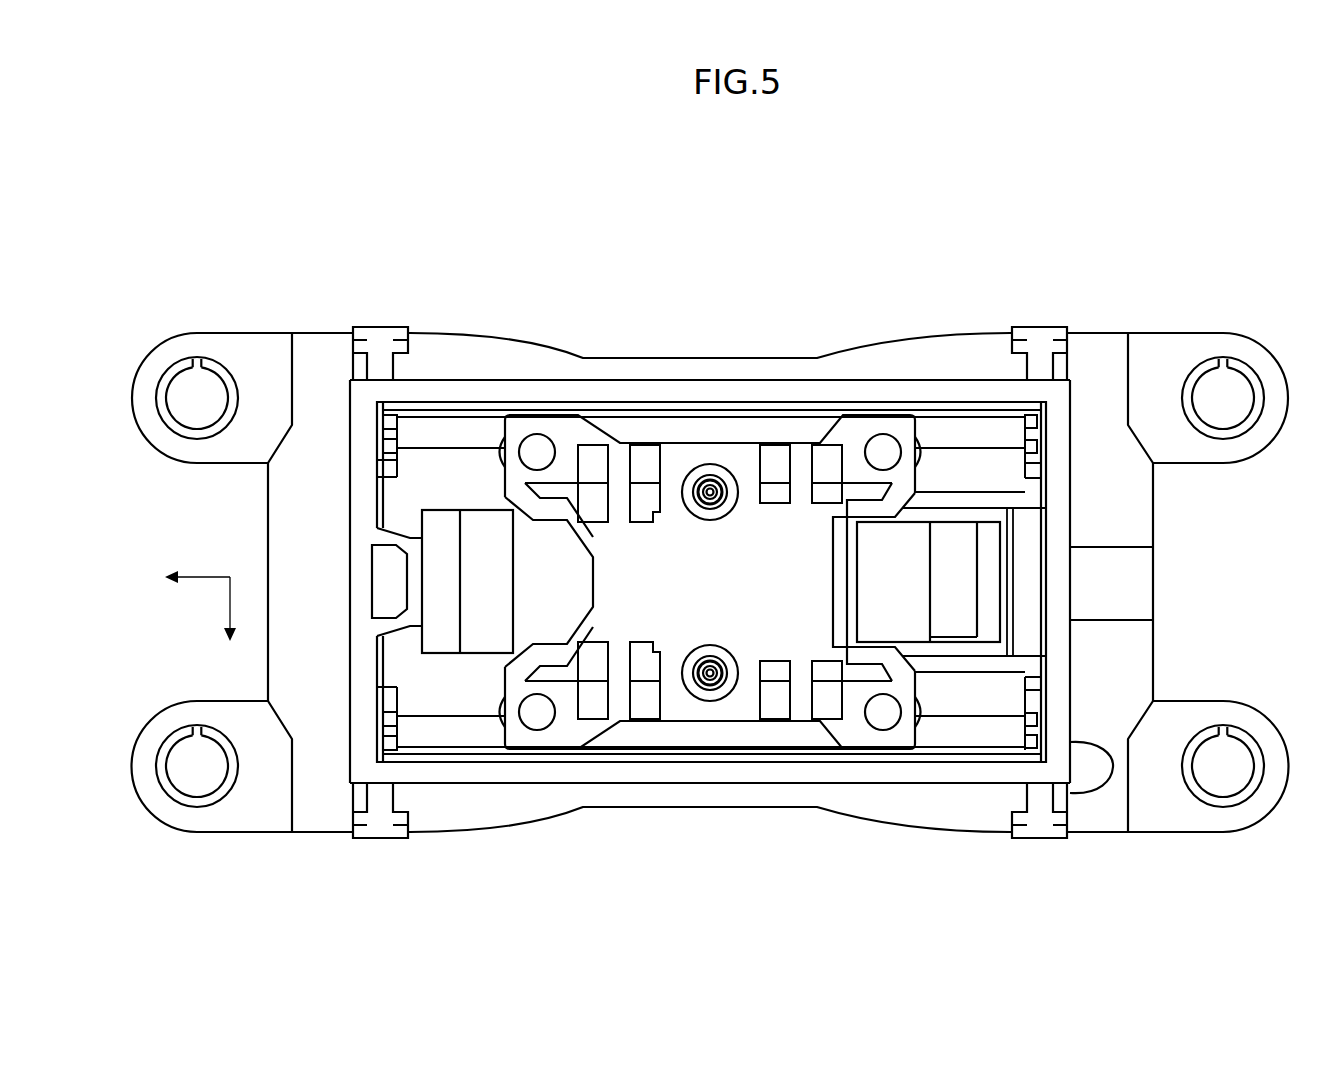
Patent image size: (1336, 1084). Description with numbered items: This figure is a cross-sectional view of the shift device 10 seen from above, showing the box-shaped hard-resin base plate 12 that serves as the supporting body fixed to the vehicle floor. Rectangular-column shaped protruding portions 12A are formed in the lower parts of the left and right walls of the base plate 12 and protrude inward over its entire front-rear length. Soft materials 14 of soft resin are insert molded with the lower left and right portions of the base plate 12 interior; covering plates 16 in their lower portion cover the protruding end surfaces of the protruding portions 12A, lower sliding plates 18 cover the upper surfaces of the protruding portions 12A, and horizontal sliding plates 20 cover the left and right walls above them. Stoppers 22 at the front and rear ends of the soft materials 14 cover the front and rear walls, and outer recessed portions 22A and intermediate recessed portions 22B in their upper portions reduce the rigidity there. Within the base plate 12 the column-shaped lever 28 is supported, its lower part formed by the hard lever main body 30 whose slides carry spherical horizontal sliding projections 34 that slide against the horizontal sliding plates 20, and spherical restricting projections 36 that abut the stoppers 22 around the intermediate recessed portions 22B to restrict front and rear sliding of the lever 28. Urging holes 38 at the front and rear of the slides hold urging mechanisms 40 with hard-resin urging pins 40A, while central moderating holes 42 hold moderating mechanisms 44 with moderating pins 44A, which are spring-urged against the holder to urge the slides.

The shift device 10 is at (292, 299).
The base plate 12 is at (453, 333).
The protruding portions 12A is at (972, 427).
The soft materials 14 is at (640, 402).
The covering plates 16 is at (478, 450).
The lower sliding plates 18 is at (772, 416).
The horizontal sliding plates 20 is at (812, 442).
The stoppers 22 is at (380, 465).
The outer recessed portions 22A is at (385, 420).
The intermediate recessed portions 22B is at (385, 445).
The lever 28 is at (711, 581).
The lever main body 30 is at (591, 583).
The horizontal sliding projections 34 is at (517, 417).
The restricting projections 36 is at (498, 452).
The urging holes 38 is at (547, 434).
The urging mechanisms 40 is at (545, 470).
The urging pins 40A is at (710, 582).
The moderating holes 42 is at (697, 466).
The moderating mechanisms 44 is at (732, 608).
The moderating pins 44A is at (722, 468).